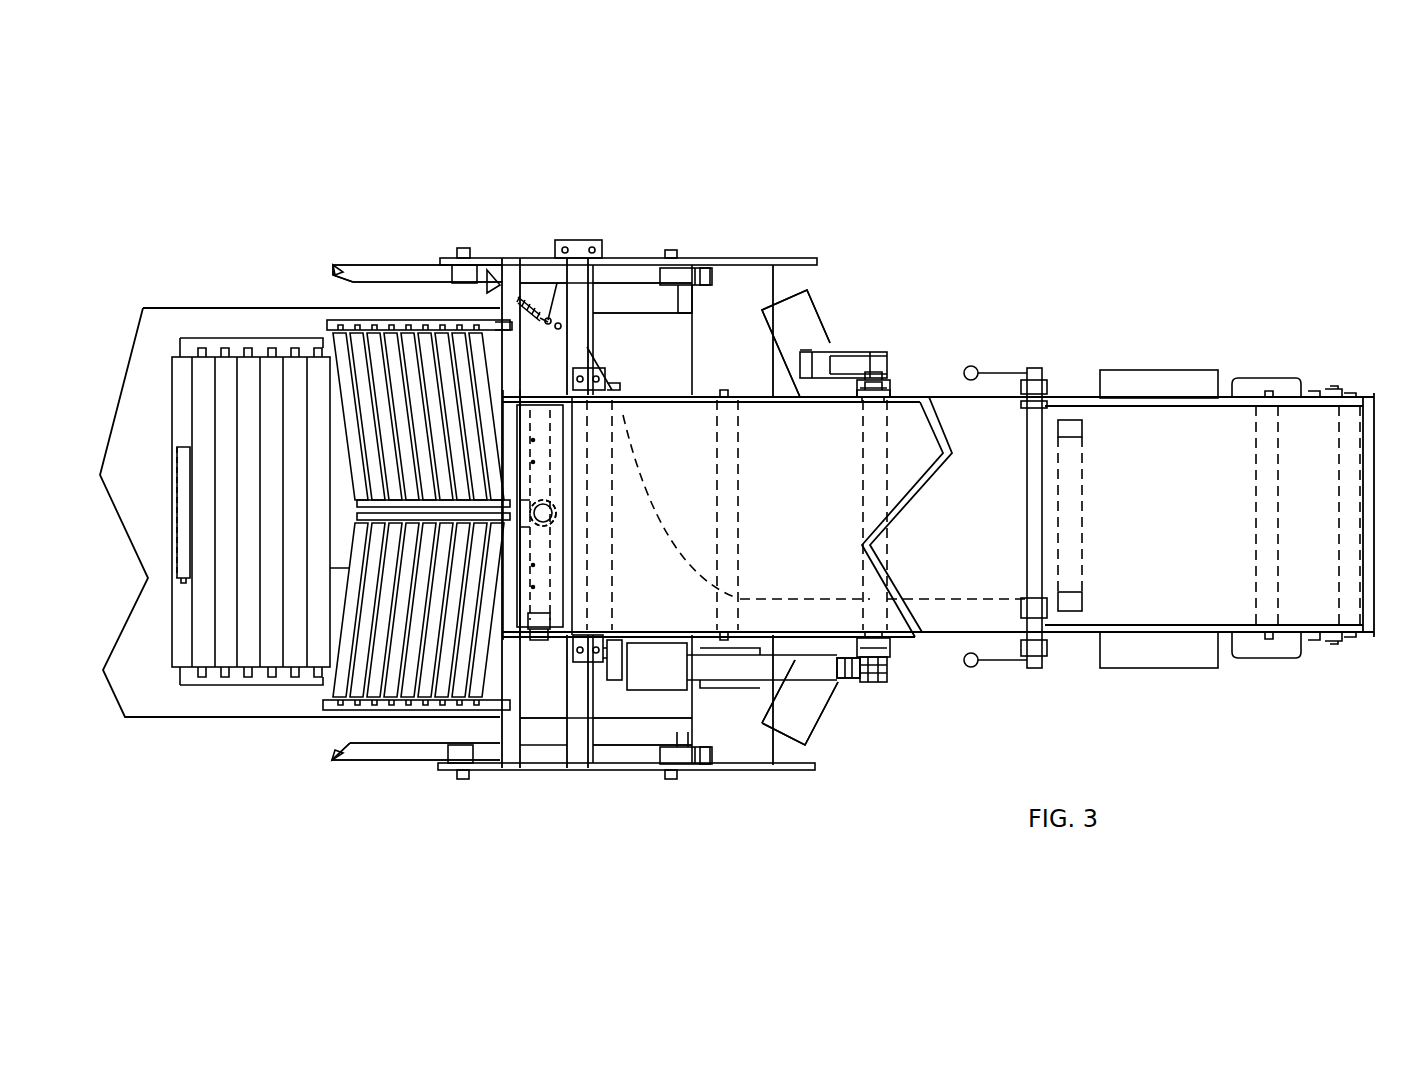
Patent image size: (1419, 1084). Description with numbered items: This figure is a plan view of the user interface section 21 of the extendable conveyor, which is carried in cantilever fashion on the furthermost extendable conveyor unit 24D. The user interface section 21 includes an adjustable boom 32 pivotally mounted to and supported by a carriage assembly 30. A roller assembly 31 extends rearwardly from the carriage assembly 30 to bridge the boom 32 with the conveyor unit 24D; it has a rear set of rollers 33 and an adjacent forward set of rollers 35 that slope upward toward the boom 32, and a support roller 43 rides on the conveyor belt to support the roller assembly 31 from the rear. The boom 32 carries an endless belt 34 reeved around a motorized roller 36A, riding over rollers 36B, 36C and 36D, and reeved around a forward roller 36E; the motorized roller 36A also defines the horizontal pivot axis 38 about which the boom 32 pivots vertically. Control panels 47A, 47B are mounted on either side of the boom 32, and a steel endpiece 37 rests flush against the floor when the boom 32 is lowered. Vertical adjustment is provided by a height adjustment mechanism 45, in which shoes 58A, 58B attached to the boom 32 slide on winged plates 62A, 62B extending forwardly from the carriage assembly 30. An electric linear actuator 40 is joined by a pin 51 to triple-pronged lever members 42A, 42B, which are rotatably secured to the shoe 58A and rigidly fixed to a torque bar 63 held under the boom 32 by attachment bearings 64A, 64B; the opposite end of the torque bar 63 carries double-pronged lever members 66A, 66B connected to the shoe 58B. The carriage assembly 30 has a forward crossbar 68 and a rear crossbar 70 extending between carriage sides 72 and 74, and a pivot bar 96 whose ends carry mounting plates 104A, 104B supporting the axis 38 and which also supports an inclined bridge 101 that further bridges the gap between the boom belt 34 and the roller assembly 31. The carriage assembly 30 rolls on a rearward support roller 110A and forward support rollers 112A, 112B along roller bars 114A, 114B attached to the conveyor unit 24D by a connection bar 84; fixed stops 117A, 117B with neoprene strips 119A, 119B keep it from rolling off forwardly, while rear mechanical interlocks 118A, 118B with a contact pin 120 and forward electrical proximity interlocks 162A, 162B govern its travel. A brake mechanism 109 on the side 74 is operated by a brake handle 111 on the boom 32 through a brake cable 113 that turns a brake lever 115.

The user interface section 21 is at (1014, 208).
The extendable conveyor unit 24D is at (743, 515).
The carriage assembly 30 is at (820, 774).
The roller assembly 31 is at (268, 690).
The adjustable boom 32 is at (1180, 606).
The rear set of rollers 33 is at (197, 390).
The endless belt 34 is at (1170, 410).
The forward set of rollers 35 is at (365, 345).
The motorized roller 36A is at (597, 560).
The roller 36B is at (732, 515).
The roller 36C is at (1072, 488).
The roller 36D is at (1268, 505).
The forward roller 36E is at (1350, 512).
The endpiece 37 is at (1372, 640).
The horizontal pivot axis 38 is at (590, 543).
The linear motor 40 is at (742, 672).
The triple-pronged lever member 42A is at (850, 677).
The triple-pronged lever member 42B is at (850, 656).
The support roller 43 is at (178, 565).
The height adjustment mechanism 45 is at (640, 675).
The control panel 47A is at (1163, 655).
The control panel 47B is at (1128, 380).
The pin 51 is at (883, 677).
The shoe 58A is at (820, 685).
The shoe 58B is at (803, 345).
The winged platform 62A is at (810, 710).
The winged platform 62B is at (808, 312).
The torque bar 63 is at (877, 453).
The attachment bearing 64A is at (887, 642).
The attachment bearing 64B is at (877, 381).
The double-pronged lever member 66A is at (860, 400).
The double-pronged lever member 66B is at (835, 360).
The forward crossbar 68 is at (578, 765).
The rear crossbar 70 is at (508, 752).
The carriage assembly side 72 is at (543, 765).
The carriage assembly side 74 is at (755, 262).
The connection bar 84 is at (625, 290).
The pivot bar 96 is at (537, 628).
The inclined bridge 101 is at (520, 407).
The mounting plate 104A is at (592, 630).
The mounting plate 104B is at (600, 410).
The brake mechanism 109 is at (580, 240).
The rearward support roller 110A is at (465, 275).
The brake handle 111 is at (990, 372).
The forward support roller 112A is at (672, 770).
The forward support roller 112B is at (672, 262).
The brake cable 113 is at (933, 599).
The extendable conveyor unit roller bar 114A is at (375, 752).
The extendable conveyor unit roller bar 114B is at (368, 270).
The brake lever 115 is at (558, 305).
The fixed stop 117A is at (708, 762).
The fixed stop 117B is at (713, 283).
The rear mechanical interlock 118A is at (340, 765).
The rear mechanical interlock 118B is at (345, 260).
The neoprene rubber strip 119A is at (700, 768).
The neoprene rubber strip 119B is at (690, 283).
The contact pin 120 is at (335, 268).
The forward electrical interlock 162A is at (683, 728).
The forward electrical interlock 162B is at (682, 302).